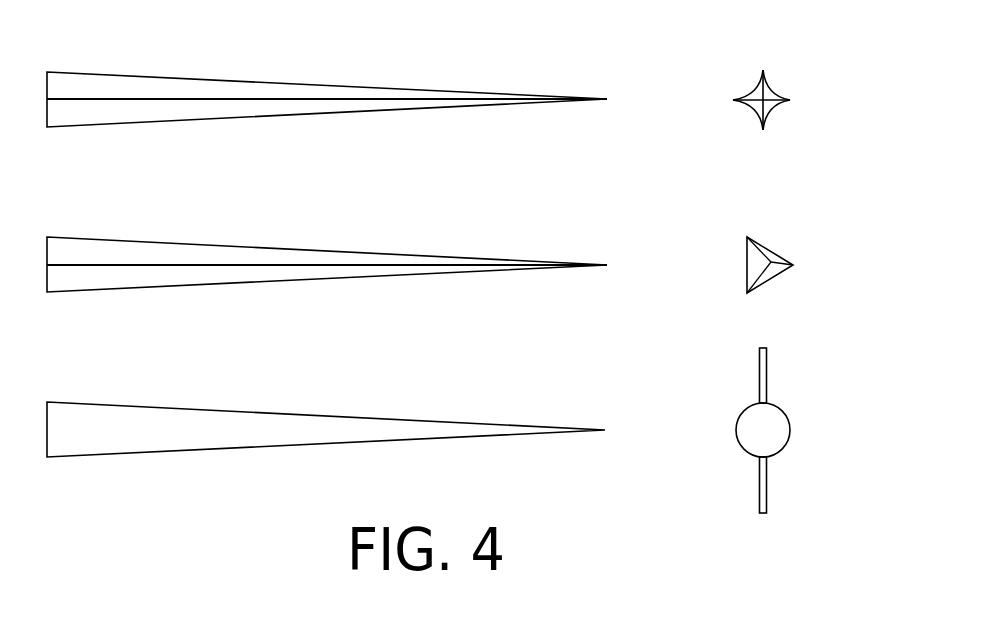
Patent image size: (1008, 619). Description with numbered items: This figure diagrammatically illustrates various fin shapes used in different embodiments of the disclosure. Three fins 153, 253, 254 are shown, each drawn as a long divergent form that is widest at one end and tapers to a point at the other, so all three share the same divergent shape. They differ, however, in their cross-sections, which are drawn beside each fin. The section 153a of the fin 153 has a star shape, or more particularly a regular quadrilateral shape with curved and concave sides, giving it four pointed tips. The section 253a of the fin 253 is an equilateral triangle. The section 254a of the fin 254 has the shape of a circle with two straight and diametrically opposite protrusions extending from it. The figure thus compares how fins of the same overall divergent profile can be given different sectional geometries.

The fin 153 is at (253, 81).
The section of the fin 153a is at (773, 88).
The fin 253 is at (238, 247).
The section of the fin 253a is at (770, 251).
The fin 254 is at (240, 413).
The section of the fin 254a is at (778, 406).